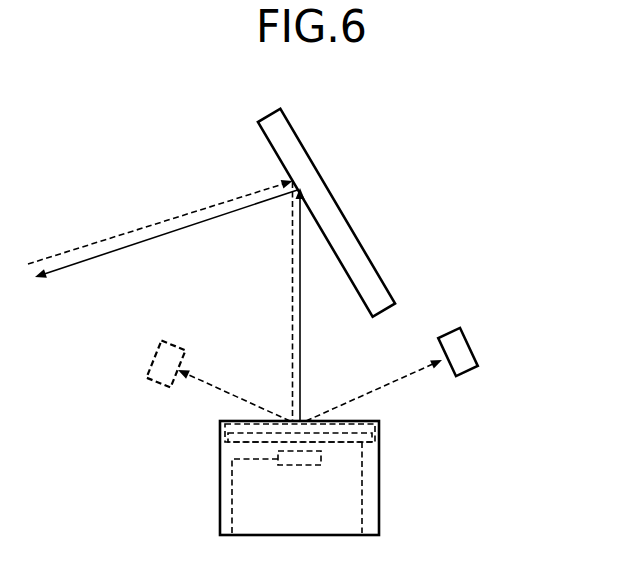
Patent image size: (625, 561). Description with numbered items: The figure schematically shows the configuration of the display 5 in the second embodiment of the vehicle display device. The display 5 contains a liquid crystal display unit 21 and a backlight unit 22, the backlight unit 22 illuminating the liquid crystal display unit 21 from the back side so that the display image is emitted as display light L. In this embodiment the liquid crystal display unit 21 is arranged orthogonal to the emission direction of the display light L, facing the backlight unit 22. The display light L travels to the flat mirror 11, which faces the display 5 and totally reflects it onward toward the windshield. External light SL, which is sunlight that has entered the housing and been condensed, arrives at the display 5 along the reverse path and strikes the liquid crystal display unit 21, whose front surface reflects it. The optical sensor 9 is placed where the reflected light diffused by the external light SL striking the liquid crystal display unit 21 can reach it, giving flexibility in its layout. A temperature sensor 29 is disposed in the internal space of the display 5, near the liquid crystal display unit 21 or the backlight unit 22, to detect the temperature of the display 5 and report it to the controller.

The flat mirror 11 is at (330, 187).
The display light L is at (300, 333).
The external light SL is at (117, 235).
The optical sensor 9 is at (469, 343).
The display 5 is at (404, 475).
The liquid crystal display unit 21 is at (377, 430).
The backlight unit 22 is at (375, 436).
The temperature sensor 29 is at (298, 465).